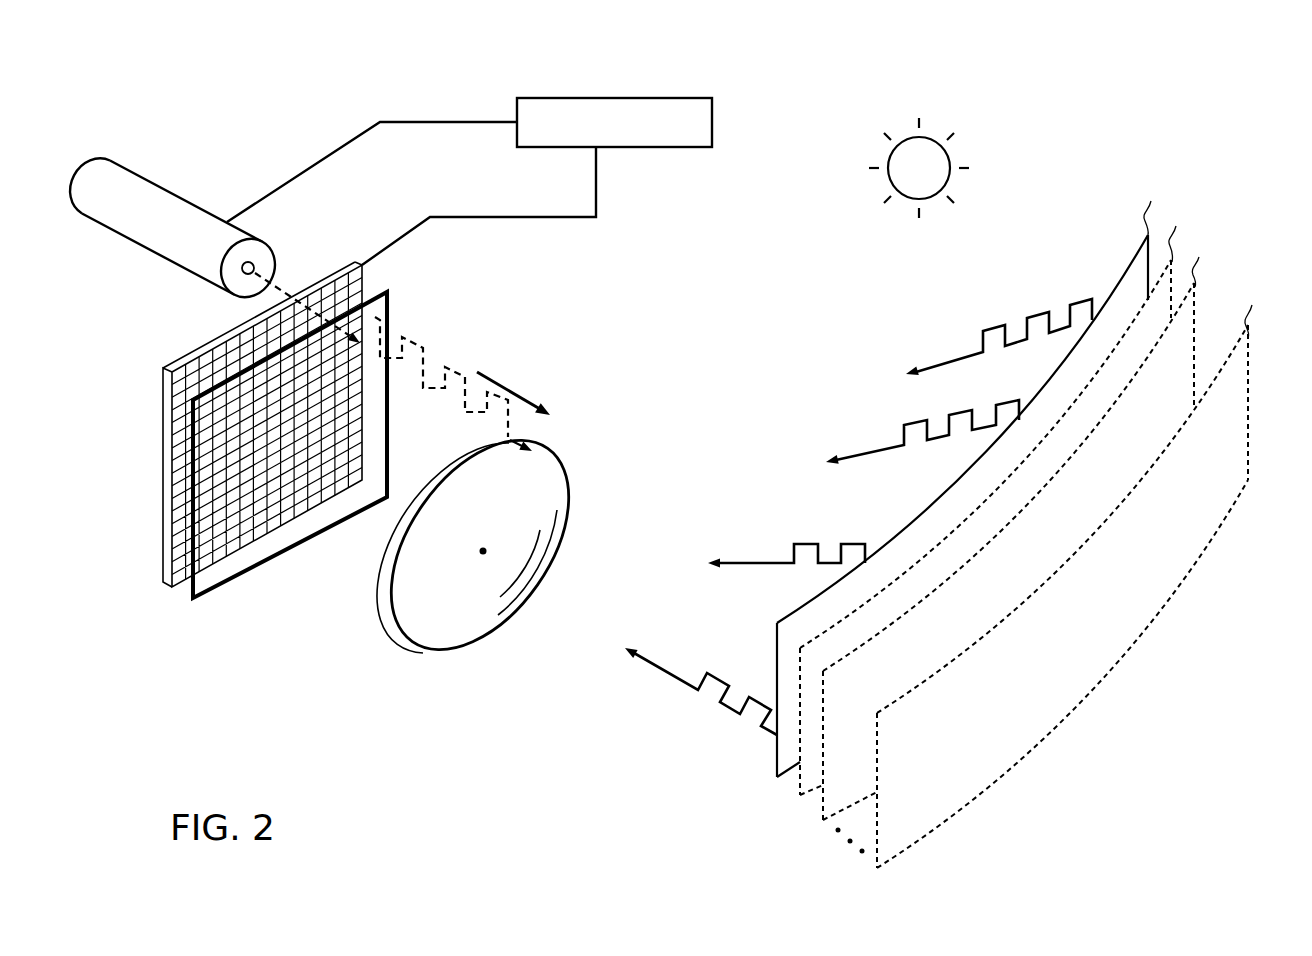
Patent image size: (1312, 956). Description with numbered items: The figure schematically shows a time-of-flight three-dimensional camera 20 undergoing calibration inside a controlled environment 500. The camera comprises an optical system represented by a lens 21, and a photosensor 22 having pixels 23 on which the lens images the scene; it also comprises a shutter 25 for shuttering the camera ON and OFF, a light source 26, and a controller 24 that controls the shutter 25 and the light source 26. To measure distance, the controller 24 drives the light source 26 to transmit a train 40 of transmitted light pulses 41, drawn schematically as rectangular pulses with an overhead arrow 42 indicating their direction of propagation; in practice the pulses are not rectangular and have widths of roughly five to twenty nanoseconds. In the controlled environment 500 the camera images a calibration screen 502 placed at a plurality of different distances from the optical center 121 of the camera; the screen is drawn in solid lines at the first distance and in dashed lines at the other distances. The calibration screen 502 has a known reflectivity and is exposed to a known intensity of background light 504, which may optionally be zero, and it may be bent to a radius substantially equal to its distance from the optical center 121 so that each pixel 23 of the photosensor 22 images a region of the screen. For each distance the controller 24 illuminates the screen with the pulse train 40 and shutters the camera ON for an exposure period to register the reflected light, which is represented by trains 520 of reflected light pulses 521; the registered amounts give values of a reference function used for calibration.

The TOF-3D camera 20 is at (163, 98).
The light source 26 is at (177, 193).
The controller 24 is at (611, 98).
The pixels 23 is at (173, 377).
The shutter 25 is at (193, 600).
The photosensor 22 is at (110, 498).
The transmitted light pulses 41 is at (402, 338).
The overhead arrow 42 is at (533, 402).
The train of transmitted light pulses 40 is at (630, 307).
The lens 21 is at (478, 640).
The optical center 121 is at (483, 553).
The controlled environment 500 is at (775, 110).
The background light 504 is at (950, 153).
The trains of reflected light pulses 520 is at (810, 533).
The reflected light pulses 521 is at (1000, 408).
The calibration screen 502 is at (800, 795).